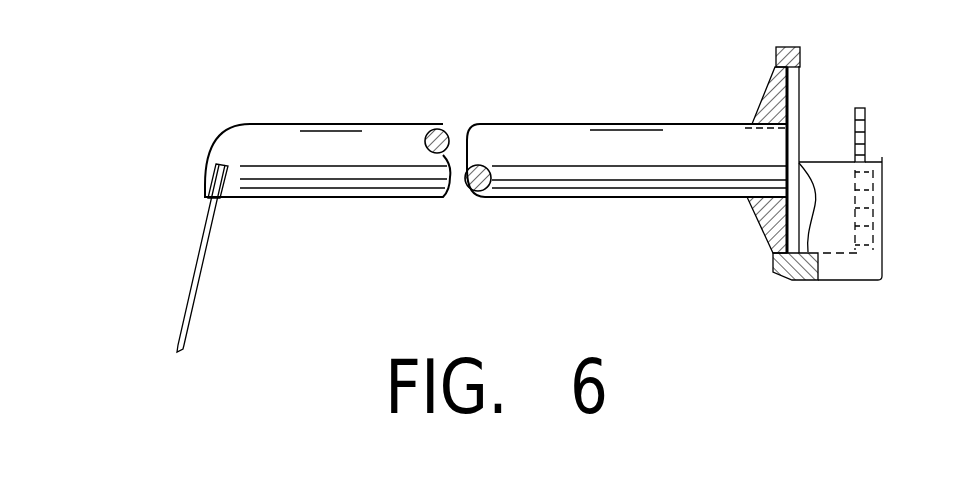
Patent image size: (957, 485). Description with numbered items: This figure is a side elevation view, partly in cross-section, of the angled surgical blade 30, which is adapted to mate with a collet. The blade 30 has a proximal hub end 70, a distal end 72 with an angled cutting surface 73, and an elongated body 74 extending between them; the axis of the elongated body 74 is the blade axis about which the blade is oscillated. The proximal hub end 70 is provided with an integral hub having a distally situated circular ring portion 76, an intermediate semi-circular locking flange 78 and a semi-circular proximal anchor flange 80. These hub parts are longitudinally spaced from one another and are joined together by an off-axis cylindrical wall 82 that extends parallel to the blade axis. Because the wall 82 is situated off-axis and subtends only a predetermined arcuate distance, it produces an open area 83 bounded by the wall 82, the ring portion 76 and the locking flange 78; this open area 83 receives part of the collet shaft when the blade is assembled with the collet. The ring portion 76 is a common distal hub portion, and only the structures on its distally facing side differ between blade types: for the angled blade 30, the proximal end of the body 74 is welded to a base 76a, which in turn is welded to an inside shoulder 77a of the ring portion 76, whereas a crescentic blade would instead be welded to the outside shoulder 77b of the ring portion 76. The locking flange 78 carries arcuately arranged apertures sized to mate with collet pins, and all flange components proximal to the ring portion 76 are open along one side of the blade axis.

The blade 30 is at (587, 108).
The elongated body 74 is at (638, 133).
The distal end 72 is at (208, 166).
The angled cutting surface 73 is at (200, 281).
The circular ring portion 76 is at (800, 50).
The base 76a is at (768, 233).
The inside shoulder 77a is at (775, 89).
The outside shoulder 77b is at (784, 46).
The proximal hub end 70 is at (832, 282).
The semi-circular proximal anchor flange 80 is at (884, 161).
The intermediate semi-circular locking flange 78 is at (866, 109).
The off-axis cylindrical wall 82 is at (847, 270).
The open area 83 is at (830, 215).